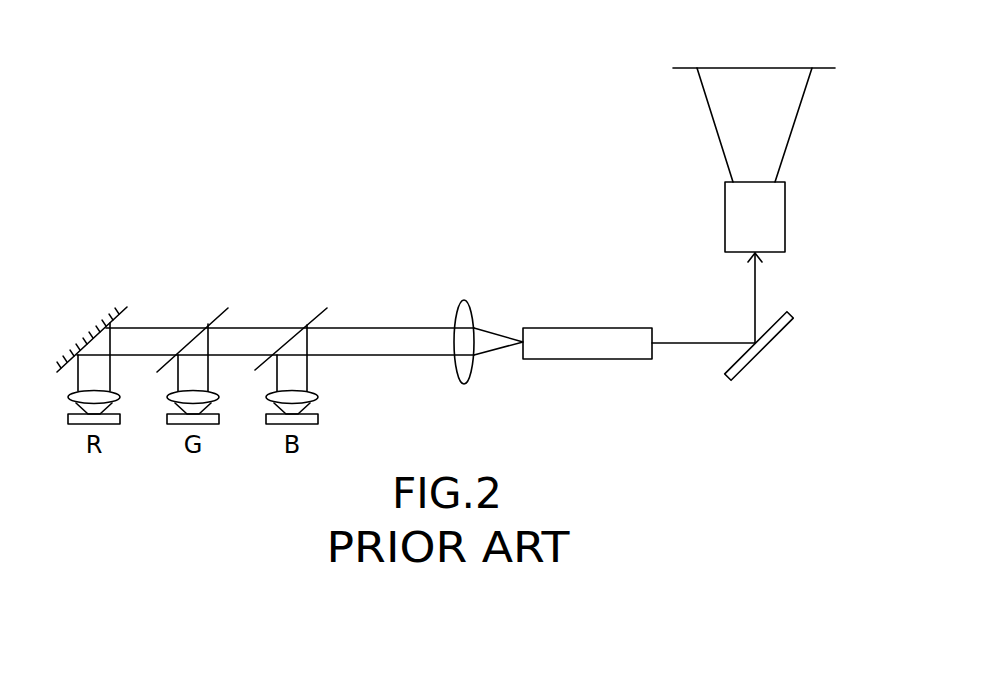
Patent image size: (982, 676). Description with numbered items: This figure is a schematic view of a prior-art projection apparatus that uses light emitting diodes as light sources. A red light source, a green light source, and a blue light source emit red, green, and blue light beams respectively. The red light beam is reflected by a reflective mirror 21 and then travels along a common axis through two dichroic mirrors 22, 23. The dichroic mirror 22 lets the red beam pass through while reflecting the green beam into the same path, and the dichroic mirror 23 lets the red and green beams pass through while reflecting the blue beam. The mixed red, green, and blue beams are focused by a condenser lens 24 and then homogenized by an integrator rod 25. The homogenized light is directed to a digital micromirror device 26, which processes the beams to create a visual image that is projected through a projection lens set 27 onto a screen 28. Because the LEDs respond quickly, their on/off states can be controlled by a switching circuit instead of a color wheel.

The reflective mirror 21 is at (94, 323).
The dichroic mirror 22 is at (204, 321).
The dichroic mirror 23 is at (304, 319).
The condenser lens 24 is at (466, 318).
The integrator rod 25 is at (604, 338).
The digital micromirror device 26 is at (771, 333).
The projection lens set 27 is at (775, 225).
The screen 28 is at (768, 67).